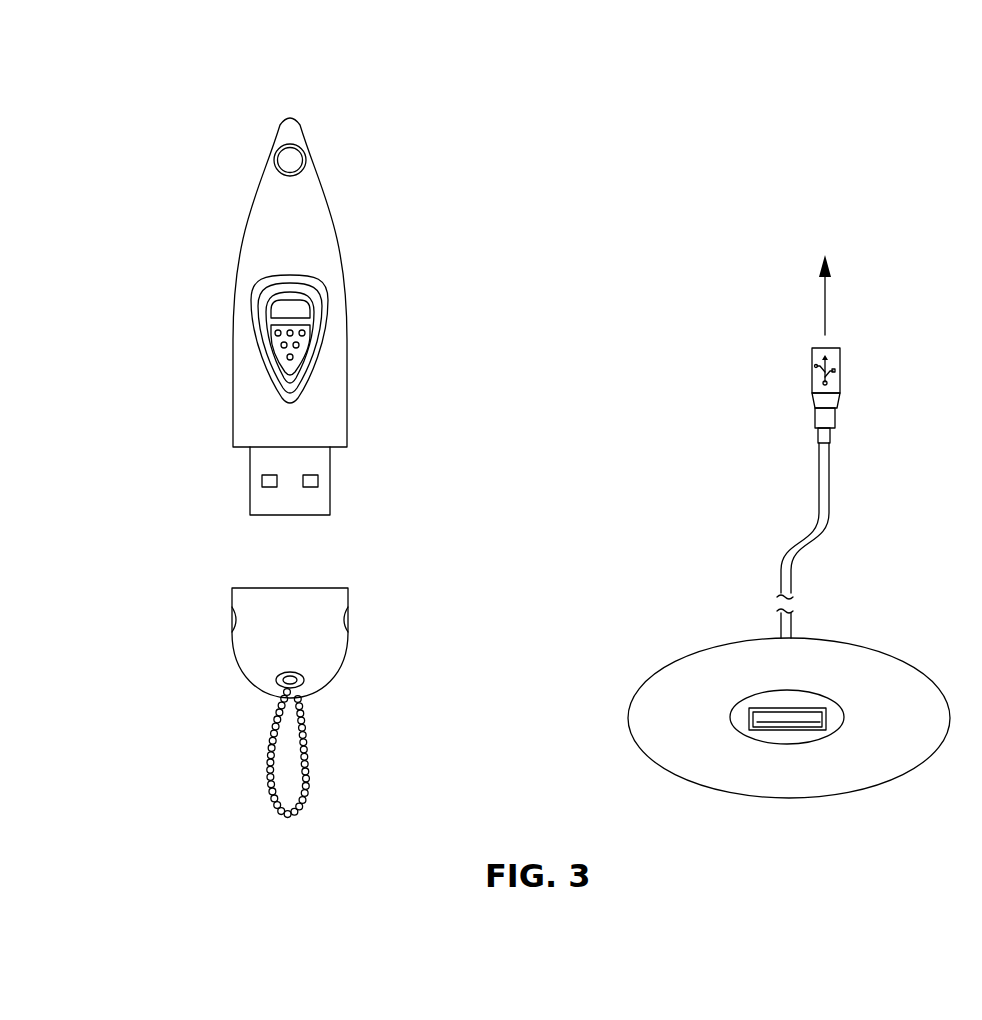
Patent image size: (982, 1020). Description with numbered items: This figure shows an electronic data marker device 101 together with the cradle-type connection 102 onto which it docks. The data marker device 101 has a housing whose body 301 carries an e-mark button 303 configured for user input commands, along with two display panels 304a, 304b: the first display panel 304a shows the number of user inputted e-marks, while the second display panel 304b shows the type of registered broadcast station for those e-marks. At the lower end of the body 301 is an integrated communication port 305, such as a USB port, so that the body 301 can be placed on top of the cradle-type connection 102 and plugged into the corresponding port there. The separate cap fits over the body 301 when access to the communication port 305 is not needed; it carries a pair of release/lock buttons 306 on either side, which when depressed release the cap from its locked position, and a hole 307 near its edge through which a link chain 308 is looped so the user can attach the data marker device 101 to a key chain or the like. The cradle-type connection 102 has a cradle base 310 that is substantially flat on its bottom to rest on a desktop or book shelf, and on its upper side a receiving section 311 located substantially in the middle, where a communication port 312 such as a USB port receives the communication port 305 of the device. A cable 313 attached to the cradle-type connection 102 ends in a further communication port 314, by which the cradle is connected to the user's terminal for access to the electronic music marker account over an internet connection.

The data marker device 101 is at (170, 117).
The cradle-type connection 102 is at (633, 312).
The body 301 is at (340, 225).
The e-mark button 303 is at (288, 158).
The display panel 304a is at (273, 300).
The display panel 304b is at (275, 355).
The communication port 305 is at (250, 480).
The release/lock buttons 306 is at (232, 620).
The hole 307 is at (262, 692).
The link chain 308 is at (310, 767).
The cradle base 310 is at (867, 647).
The receiving section 311 is at (817, 708).
The communication port 312 is at (803, 725).
The cable 313 is at (819, 492).
The communication port 314 is at (810, 383).